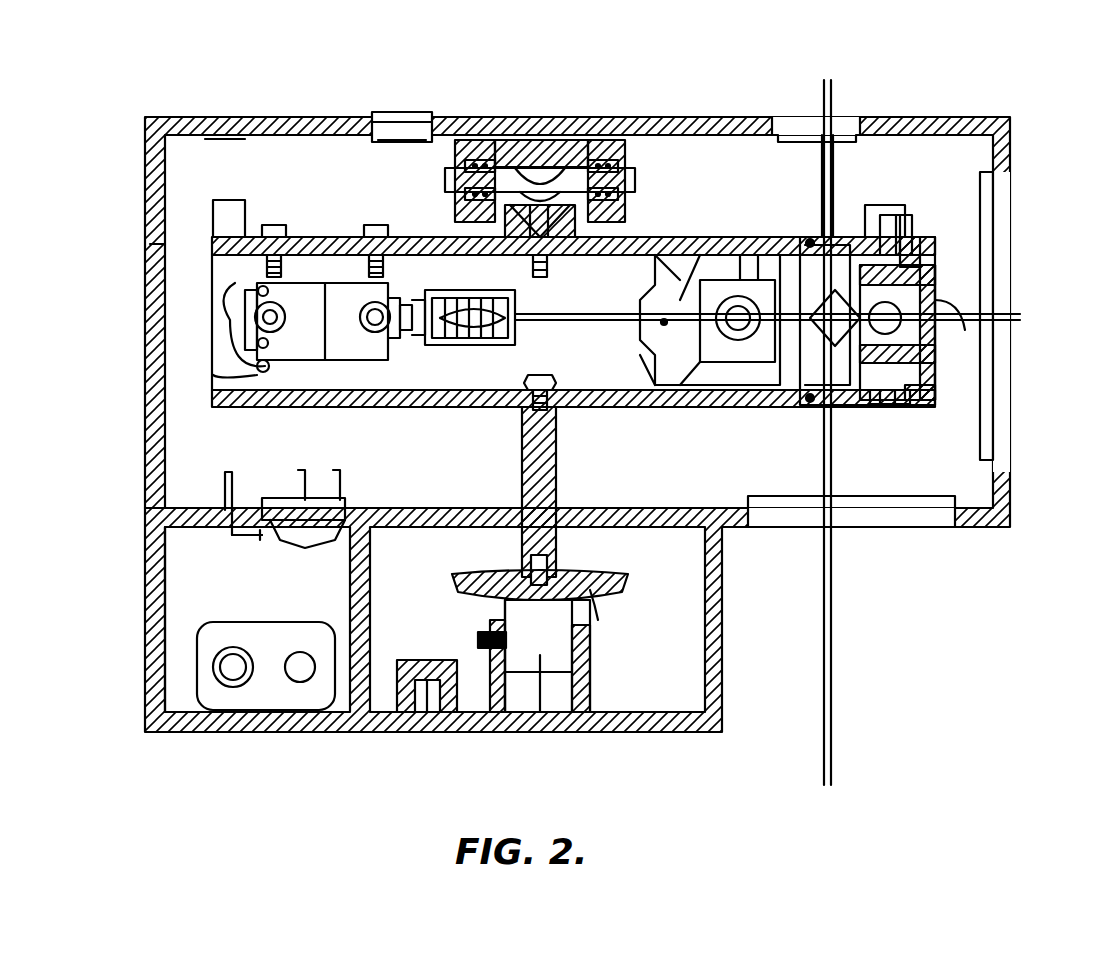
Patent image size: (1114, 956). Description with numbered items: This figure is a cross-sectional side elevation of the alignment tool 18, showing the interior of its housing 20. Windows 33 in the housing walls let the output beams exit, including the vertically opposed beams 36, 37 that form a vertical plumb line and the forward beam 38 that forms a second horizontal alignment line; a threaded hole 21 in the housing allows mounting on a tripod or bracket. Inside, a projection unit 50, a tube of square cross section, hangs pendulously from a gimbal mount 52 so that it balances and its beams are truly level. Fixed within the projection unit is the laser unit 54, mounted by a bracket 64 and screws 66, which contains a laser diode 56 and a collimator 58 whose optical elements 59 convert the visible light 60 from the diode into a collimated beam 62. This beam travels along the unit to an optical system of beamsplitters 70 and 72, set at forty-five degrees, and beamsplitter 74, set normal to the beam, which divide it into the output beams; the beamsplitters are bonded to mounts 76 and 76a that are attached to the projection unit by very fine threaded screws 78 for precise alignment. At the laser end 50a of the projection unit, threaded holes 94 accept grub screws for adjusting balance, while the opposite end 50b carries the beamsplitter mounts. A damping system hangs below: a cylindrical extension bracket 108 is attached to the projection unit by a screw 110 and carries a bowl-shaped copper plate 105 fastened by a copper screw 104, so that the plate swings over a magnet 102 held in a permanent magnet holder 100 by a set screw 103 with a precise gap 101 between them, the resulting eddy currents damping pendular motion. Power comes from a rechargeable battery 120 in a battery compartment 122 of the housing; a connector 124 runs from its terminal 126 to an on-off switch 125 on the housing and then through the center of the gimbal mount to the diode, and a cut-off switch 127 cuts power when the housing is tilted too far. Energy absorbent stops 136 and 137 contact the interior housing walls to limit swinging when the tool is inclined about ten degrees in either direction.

The alignment tool 18 is at (278, 792).
The housing 20 is at (238, 114).
The threaded hole 21 is at (422, 715).
The windows 33 is at (800, 134).
The output beam 36 is at (854, 160).
The output beam 37 is at (834, 700).
The output beam 38 is at (965, 335).
The projection unit 50 is at (578, 322).
The end of projection unit 50a is at (210, 270).
The lower frame plate 50b is at (950, 272).
The gimbal mount 52 is at (600, 160).
The laser unit 54 is at (405, 360).
The laser diode 56 is at (405, 300).
The collimator 58 is at (440, 292).
The optical elements 59 is at (462, 340).
The visible light 60 is at (398, 368).
The collimated beam 62 is at (570, 300).
The bracket 64 is at (295, 268).
The screws 66 is at (272, 252).
The beamsplitter 70 is at (742, 300).
The beamsplitter 72 is at (925, 312).
The beamsplitter 74 is at (845, 240).
The mount 76 is at (940, 290).
The mount 76a is at (876, 250).
The fine threaded screws 78 is at (898, 405).
The threaded holes 94 is at (262, 366).
The permanent magnet holder 100 is at (521, 692).
The gap 101 is at (510, 602).
The magnet 102 is at (538, 715).
The set screw 103 is at (495, 715).
The copper screw 104 is at (592, 592).
The copper plate 105 is at (615, 583).
The cylindrical extension bracket 108 is at (548, 530).
The screw 110 is at (552, 415).
The rechargeable battery 120 is at (230, 702).
The battery compartment 122 is at (190, 612).
The connector 124 is at (540, 134).
The on-off switch 125 is at (393, 130).
The terminal 126 is at (215, 489).
The cut-off switch 127 is at (275, 545).
The energy absorbent stop 136 is at (222, 205).
The energy absorbent stop 137 is at (905, 200).